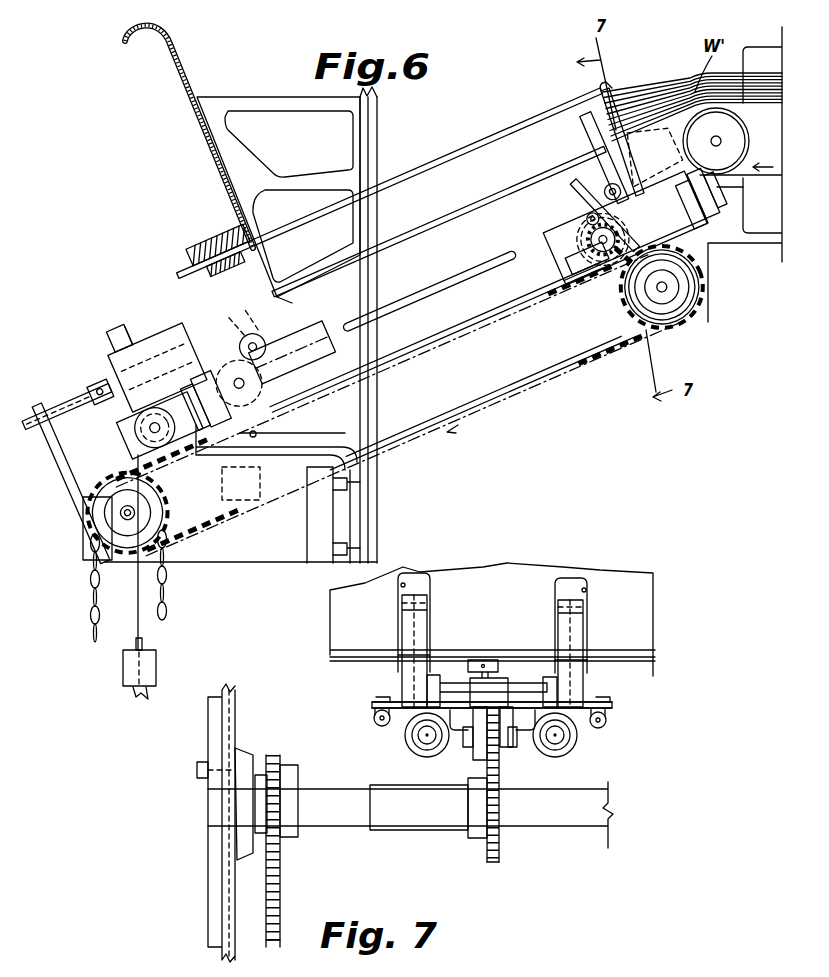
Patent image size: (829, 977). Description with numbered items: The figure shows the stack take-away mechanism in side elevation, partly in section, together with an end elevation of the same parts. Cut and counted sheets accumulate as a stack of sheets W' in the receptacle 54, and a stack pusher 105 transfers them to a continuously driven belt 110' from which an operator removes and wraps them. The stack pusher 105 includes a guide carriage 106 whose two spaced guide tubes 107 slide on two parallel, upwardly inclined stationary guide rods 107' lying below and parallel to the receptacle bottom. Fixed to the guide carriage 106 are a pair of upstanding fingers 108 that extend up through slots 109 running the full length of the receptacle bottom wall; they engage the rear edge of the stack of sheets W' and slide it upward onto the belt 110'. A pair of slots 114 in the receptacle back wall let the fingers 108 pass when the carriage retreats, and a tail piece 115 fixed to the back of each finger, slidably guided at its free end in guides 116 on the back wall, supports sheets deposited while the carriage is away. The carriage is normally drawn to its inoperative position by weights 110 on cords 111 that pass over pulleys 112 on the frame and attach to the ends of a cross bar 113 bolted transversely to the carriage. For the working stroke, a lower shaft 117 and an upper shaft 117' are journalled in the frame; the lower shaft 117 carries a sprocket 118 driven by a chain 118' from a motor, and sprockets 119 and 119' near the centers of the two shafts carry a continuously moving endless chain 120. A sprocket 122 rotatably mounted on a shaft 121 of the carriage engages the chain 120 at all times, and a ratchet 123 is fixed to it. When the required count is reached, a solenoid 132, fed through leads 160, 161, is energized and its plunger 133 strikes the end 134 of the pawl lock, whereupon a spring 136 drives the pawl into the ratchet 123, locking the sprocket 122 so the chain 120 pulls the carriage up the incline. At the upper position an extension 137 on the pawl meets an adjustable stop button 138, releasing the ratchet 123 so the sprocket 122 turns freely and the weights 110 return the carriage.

In FIG. 6, the receptacle 54 is at (293, 298).
In FIG. 7, the receptacle 54 is at (655, 660).
In FIG. 7, the stack pusher 105 is at (612, 694).
In FIG. 7, the guide carriage 106 is at (505, 742).
In FIG. 6, the guide tubes 107 is at (657, 252).
In FIG. 7, the guide tubes 107 is at (494, 740).
In FIG. 6, the stationary guide rods 107' is at (571, 239).
In FIG. 7, the stationary guide rods 107' is at (531, 754).
In FIG. 6, the upstanding fingers 108 is at (612, 93).
In FIG. 7, the upstanding fingers 108 is at (423, 625).
In FIG. 6, the slots 109 is at (465, 205).
In FIG. 7, the slots 109 is at (395, 657).
In FIG. 6, the weights 110 is at (114, 673).
In FIG. 6, the continuously driven belt 110' is at (761, 192).
In FIG. 6, the cords 111 is at (420, 296).
In FIG. 7, the cords 111 is at (373, 720).
In FIG. 6, the pulleys 112 is at (145, 430).
In FIG. 7, the cross bar 113 is at (395, 705).
In FIG. 7, the slots 114 is at (400, 587).
In FIG. 6, the tail piece 115 is at (415, 170).
In FIG. 6, the guides 116 is at (195, 240).
In FIG. 6, the lower shaft 117 is at (106, 523).
In FIG. 7, the lower shaft 117 is at (410, 825).
In FIG. 6, the upper shaft 117' is at (662, 314).
In FIG. 7, the sprocket 118 is at (284, 835).
In FIG. 6, the chain 118' is at (189, 575).
In FIG. 7, the chain 118' is at (307, 906).
In FIG. 6, the sprocket 119 is at (380, 384).
In FIG. 6, the sprocket 119' is at (619, 291).
In FIG. 7, the sprocket 119' is at (524, 798).
In FIG. 6, the endless chain 120 is at (205, 530).
In FIG. 7, the endless chain 120 is at (485, 866).
In FIG. 6, the shaft 121 is at (588, 232).
In FIG. 7, the shaft 121 is at (476, 755).
In FIG. 6, the sprocket 122 is at (588, 262).
In FIG. 7, the sprocket 122 is at (500, 770).
In FIG. 6, the ratchet 123 is at (585, 305).
In FIG. 6, the solenoid 132 is at (160, 335).
In FIG. 6, the plunger 133 is at (236, 365).
In FIG. 6, the end of pawl lock 134 is at (237, 310).
In FIG. 6, the spring 136 is at (685, 187).
In FIG. 6, the extension 137 is at (258, 335).
In FIG. 6, the adjustable stop button 138 is at (605, 165).
In FIG. 6, the lead 160 is at (107, 343).
In FIG. 6, the lead 161 is at (128, 335).
In FIG. 6, the stack of sheets W' is at (692, 107).